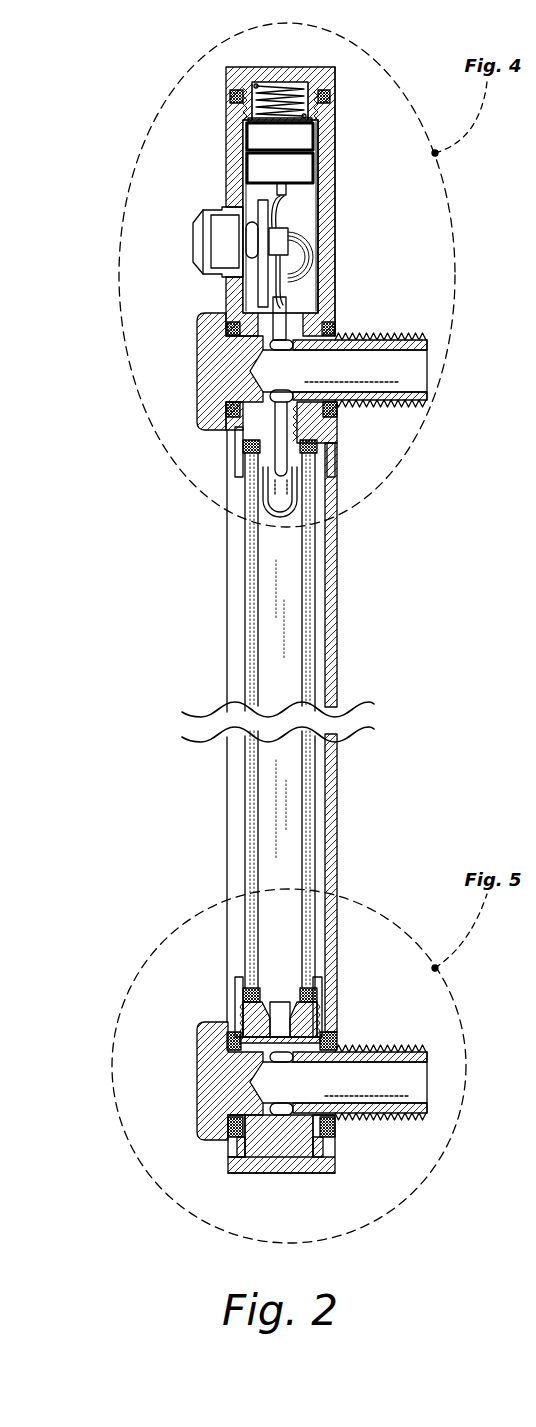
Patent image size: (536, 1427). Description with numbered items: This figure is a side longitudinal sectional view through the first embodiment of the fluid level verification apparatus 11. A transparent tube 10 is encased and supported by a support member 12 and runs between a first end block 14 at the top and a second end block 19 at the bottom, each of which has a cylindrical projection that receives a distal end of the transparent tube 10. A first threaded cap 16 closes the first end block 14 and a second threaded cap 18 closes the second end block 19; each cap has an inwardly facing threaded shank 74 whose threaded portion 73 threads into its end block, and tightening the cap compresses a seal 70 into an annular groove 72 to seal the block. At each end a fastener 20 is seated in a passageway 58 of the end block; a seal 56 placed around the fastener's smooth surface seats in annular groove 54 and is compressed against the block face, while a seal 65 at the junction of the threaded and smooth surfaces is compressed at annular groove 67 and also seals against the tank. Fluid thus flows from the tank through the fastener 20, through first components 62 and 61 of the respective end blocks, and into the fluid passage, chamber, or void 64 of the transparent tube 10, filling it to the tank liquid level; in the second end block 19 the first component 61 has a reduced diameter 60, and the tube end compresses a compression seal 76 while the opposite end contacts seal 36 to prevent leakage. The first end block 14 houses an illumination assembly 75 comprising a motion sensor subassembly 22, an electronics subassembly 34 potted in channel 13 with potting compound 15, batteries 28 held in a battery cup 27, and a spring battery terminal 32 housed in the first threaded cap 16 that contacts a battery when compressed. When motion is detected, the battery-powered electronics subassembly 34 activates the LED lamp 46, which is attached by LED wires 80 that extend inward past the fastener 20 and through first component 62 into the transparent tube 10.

The transparent tube 10 is at (250, 775).
The apparatus 11 is at (170, 830).
The support member 12 is at (338, 645).
The channel 13 is at (300, 200).
The first end block 14 is at (335, 288).
The potting compound 15 is at (310, 228).
The first threaded cap 16 is at (280, 64).
The second threaded cap 18 is at (283, 1175).
The second end block 19 is at (234, 992).
The fastener 20 is at (197, 347).
The motion sensor subassembly 22 is at (188, 240).
The battery cup 27 is at (320, 150).
The batteries 28 is at (250, 167).
The spring battery terminal 32 is at (240, 106).
The electronics subassembly 34 is at (290, 242).
The seal 36 is at (320, 445).
The LED lamp 46 is at (268, 503).
The annular groove 54 is at (243, 428).
The seal 56 is at (230, 408).
The passageway 58 is at (235, 382).
The reduced diameter 60 is at (280, 990).
The first component 61 is at (258, 995).
The first component 62 is at (250, 448).
The fluid passage, chamber, or void 64 is at (268, 645).
The seal 65 is at (315, 447).
The annular groove 67 is at (334, 410).
The seal 70 is at (330, 95).
The annular groove 72 is at (305, 82).
The threaded portion 73 is at (332, 112).
The threaded shank 74 is at (238, 97).
The illumination assembly 75 is at (210, 293).
The compression seal 76 is at (318, 984).
The LED wires 80 is at (233, 321).